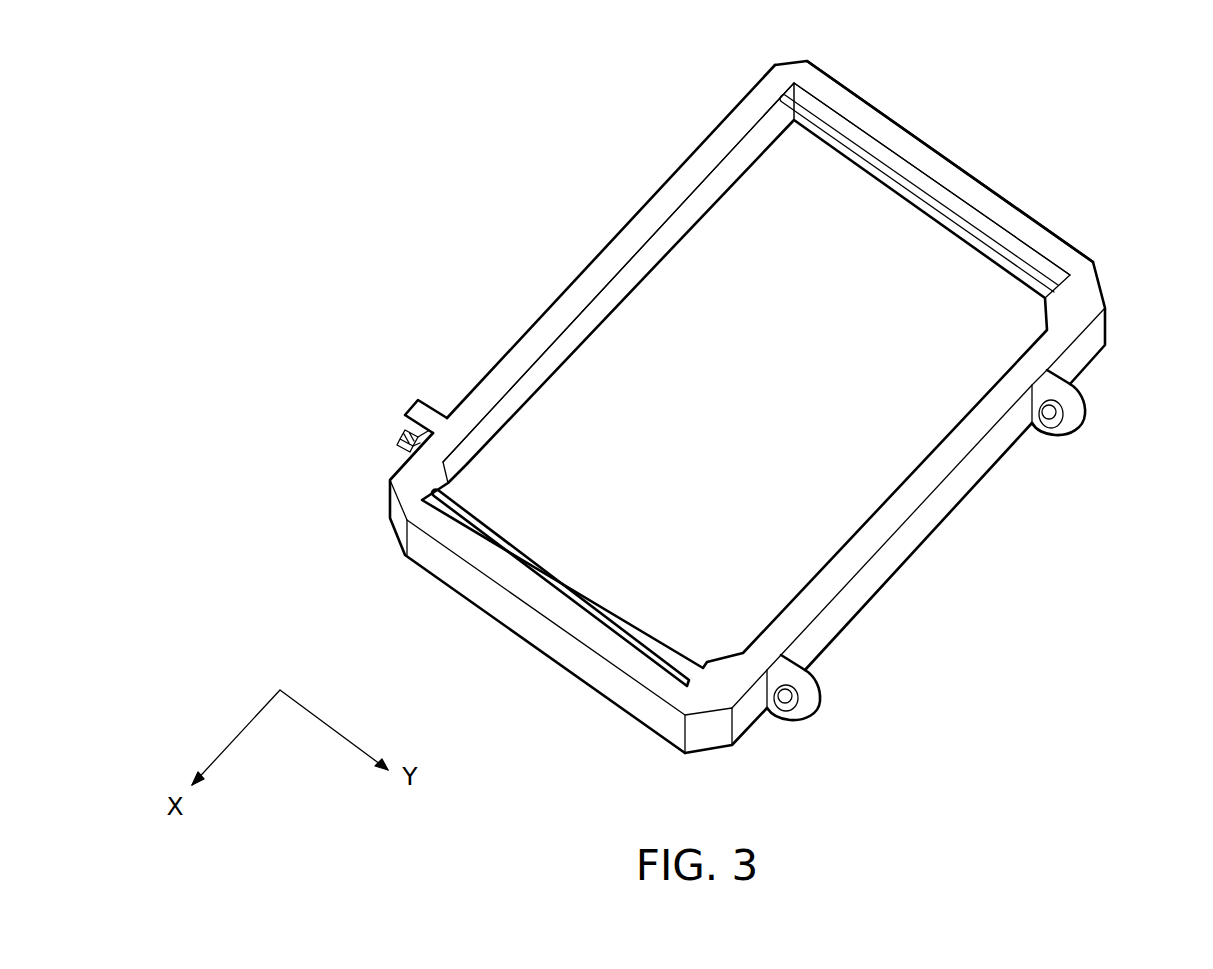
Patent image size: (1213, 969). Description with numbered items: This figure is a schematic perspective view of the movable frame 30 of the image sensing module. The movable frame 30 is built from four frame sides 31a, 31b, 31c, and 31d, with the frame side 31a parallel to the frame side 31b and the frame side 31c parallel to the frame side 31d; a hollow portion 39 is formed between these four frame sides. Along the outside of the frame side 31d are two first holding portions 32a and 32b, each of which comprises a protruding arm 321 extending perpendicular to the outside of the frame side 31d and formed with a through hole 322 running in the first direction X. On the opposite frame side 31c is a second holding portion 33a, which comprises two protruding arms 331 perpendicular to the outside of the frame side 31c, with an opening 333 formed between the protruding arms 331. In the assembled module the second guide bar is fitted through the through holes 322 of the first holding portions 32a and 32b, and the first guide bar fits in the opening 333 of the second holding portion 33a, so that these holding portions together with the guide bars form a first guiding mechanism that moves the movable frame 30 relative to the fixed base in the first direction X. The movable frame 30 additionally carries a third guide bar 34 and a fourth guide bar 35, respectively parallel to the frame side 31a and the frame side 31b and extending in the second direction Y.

The movable frame 30 is at (888, 125).
The frame side 31a is at (985, 190).
The frame side 31b is at (466, 583).
The frame side 31c is at (610, 262).
The frame side 31d is at (912, 535).
The first holding portion 32a is at (767, 711).
The first holding portion 32b is at (1033, 434).
The protruding arm 321 is at (1086, 394).
The through hole 322 is at (1052, 416).
The second holding portion 33a is at (414, 398).
The protruding arm 331 is at (427, 405).
The opening 333 is at (406, 433).
The third guide bar 34 is at (1012, 247).
The fourth guide bar 35 is at (580, 598).
The hollow portion 39 is at (741, 245).